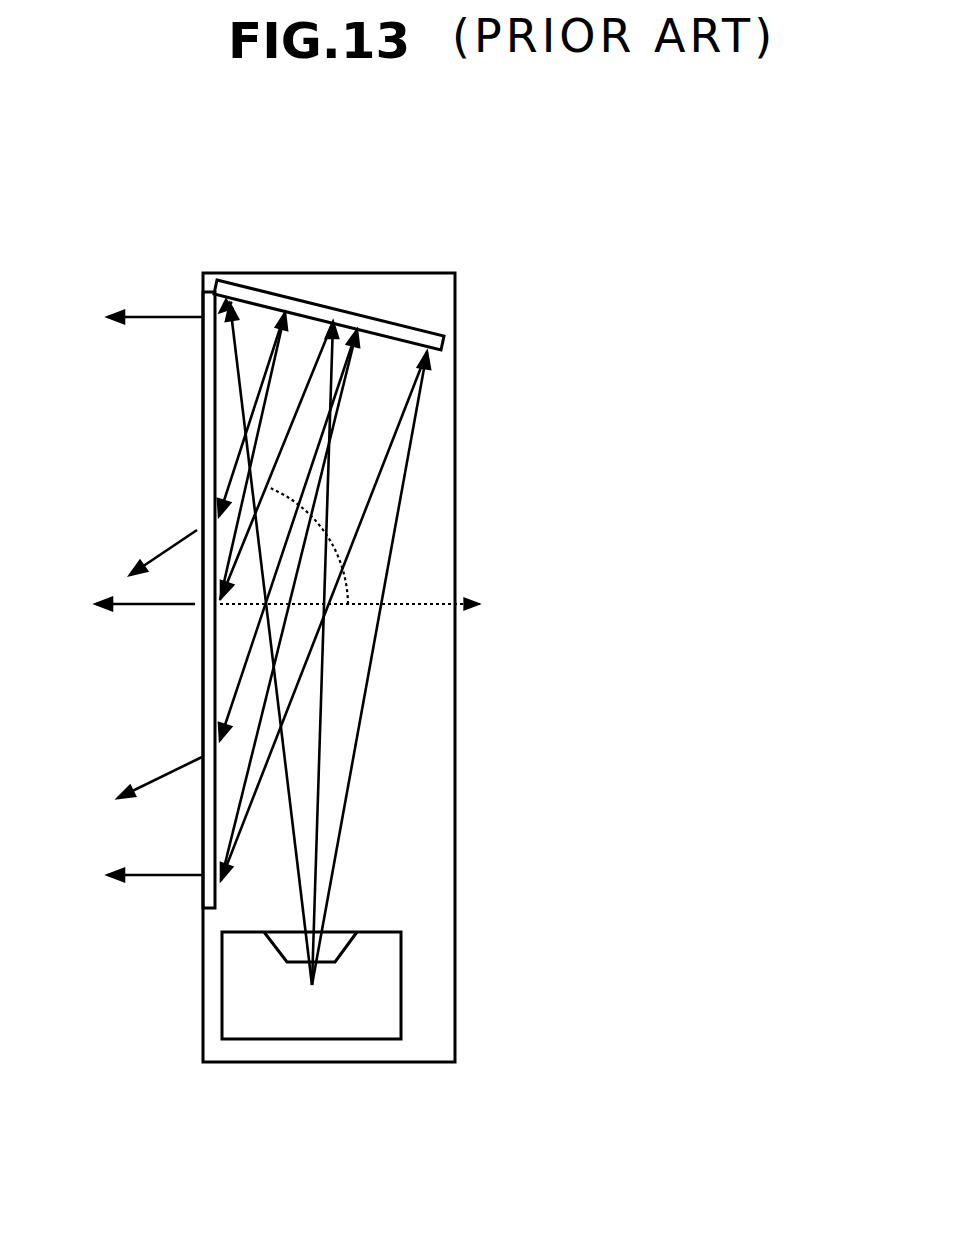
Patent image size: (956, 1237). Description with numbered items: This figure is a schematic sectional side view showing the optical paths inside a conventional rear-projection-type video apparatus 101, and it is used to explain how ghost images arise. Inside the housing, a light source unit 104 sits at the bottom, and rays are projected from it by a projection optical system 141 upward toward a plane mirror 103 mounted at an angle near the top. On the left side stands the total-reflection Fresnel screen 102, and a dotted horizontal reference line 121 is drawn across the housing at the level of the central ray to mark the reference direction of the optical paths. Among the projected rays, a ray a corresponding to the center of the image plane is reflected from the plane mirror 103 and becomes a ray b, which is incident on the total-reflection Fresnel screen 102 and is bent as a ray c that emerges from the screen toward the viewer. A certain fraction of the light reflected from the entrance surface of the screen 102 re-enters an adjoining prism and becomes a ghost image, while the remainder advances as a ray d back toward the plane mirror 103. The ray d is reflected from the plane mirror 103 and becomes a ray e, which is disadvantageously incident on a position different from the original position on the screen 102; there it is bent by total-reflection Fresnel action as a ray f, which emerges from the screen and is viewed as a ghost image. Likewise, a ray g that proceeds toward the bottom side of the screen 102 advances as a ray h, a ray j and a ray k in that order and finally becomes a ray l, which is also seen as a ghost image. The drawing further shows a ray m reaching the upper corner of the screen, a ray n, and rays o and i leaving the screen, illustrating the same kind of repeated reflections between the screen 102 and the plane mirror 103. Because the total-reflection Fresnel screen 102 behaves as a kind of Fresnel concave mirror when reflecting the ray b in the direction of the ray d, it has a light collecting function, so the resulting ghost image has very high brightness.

The rear-projection-type video apparatus 101 is at (437, 833).
The total-reflection Fresnel screen 102 is at (213, 355).
The plane mirror 103 is at (400, 330).
The light source unit 104 is at (382, 988).
The reference line (horizontal) 121 is at (455, 612).
The projection optical system 141 is at (337, 948).
The ray a is at (322, 692).
The ray b is at (270, 445).
The ray c is at (145, 603).
The ray d is at (270, 388).
The ray e is at (232, 473).
The ray f is at (160, 548).
The ray g is at (358, 742).
The ray h is at (243, 830).
The light ray i is at (205, 872).
The ray j is at (252, 746).
The ray k is at (225, 690).
The ray l is at (165, 775).
The light ray m is at (240, 357).
The light ray n is at (215, 292).
The light ray o is at (207, 300).